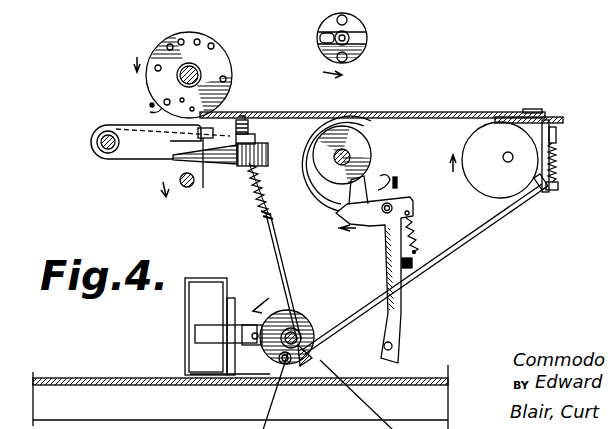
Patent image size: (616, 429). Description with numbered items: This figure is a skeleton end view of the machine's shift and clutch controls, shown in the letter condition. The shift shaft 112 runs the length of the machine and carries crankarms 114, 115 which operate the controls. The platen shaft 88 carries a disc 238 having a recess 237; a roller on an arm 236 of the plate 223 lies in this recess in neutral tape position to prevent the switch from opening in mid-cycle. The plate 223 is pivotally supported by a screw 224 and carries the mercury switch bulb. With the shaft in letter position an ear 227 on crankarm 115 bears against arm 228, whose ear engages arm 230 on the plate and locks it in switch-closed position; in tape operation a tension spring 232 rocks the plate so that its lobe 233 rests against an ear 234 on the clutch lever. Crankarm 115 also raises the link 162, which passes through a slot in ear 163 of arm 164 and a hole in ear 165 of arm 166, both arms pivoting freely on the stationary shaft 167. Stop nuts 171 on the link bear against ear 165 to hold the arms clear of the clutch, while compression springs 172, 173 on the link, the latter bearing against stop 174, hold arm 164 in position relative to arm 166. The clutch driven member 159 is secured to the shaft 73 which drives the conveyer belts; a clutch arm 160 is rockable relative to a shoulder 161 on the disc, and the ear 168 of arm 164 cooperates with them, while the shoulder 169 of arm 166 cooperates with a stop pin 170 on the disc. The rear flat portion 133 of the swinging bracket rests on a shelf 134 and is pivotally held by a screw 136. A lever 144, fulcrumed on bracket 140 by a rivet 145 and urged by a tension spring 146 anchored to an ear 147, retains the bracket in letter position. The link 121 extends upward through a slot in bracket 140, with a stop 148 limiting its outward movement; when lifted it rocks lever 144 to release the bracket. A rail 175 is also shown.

The shaft 73 is at (191, 62).
The platen shaft 88 is at (342, 155).
The shift shaft 112 is at (289, 353).
The crankarm 114 is at (279, 360).
The crankarm 115 is at (305, 365).
The link 121 is at (458, 235).
The rear flat portion 133 is at (550, 116).
The shelf 134 is at (520, 121).
The screw 136 is at (528, 109).
The bracket 140 is at (505, 160).
The lever 144 is at (556, 122).
The rivet 145 is at (557, 136).
The tension spring 146 is at (557, 166).
The ear 147 is at (553, 191).
The stop 148 is at (533, 178).
The clutch driven member 159 is at (168, 50).
The clutch arm 160 is at (151, 104).
The shoulder 161 is at (158, 106).
The link 162 is at (285, 270).
The ear 163 is at (258, 162).
The arm 164 is at (262, 146).
The ear 165 is at (249, 128).
The arm 166 is at (160, 150).
The stationary shaft 167 is at (97, 141).
The ear 168 is at (226, 114).
The shoulder 169 is at (202, 170).
The stop pin 170 is at (152, 113).
The stop nuts 171 is at (249, 120).
The helical compression spring 172 is at (212, 162).
The helical compression spring 173 is at (253, 195).
The stop 174 is at (273, 217).
The rail 175 is at (372, 115).
The plate 223 is at (378, 220).
The screw 224 is at (393, 207).
The ear 227 is at (385, 295).
The arm 228 is at (400, 300).
The arm 230 is at (401, 258).
The tension spring 232 is at (430, 230).
The lobe 233 is at (383, 177).
The ear 234 is at (398, 182).
The arm 236 is at (349, 204).
The recess 237 is at (340, 165).
The disc 238 is at (356, 147).